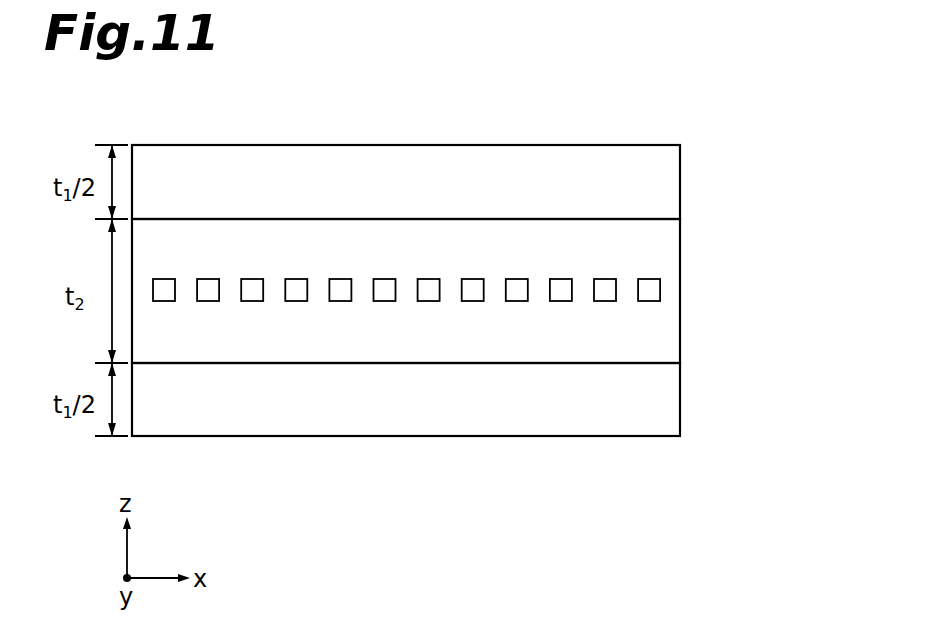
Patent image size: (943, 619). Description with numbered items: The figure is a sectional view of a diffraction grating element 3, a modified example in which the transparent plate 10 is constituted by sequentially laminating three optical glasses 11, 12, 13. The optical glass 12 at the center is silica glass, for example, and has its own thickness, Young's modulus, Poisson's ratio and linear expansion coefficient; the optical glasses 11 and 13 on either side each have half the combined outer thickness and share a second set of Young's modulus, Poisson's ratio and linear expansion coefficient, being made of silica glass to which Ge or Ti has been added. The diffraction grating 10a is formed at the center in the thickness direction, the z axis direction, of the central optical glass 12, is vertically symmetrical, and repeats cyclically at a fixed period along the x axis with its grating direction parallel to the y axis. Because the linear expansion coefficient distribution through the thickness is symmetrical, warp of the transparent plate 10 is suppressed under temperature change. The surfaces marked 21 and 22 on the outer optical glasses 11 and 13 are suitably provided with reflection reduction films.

The diffraction grating element 3 is at (816, 87).
The transparent plate 10 is at (761, 153).
The diffraction grating 10a is at (660, 289).
The optical glass 11 is at (657, 176).
The optical glass 12 is at (657, 251).
The optical glass 13 is at (657, 398).
The upper surface 21 is at (657, 108).
The lower surface 22 is at (657, 491).